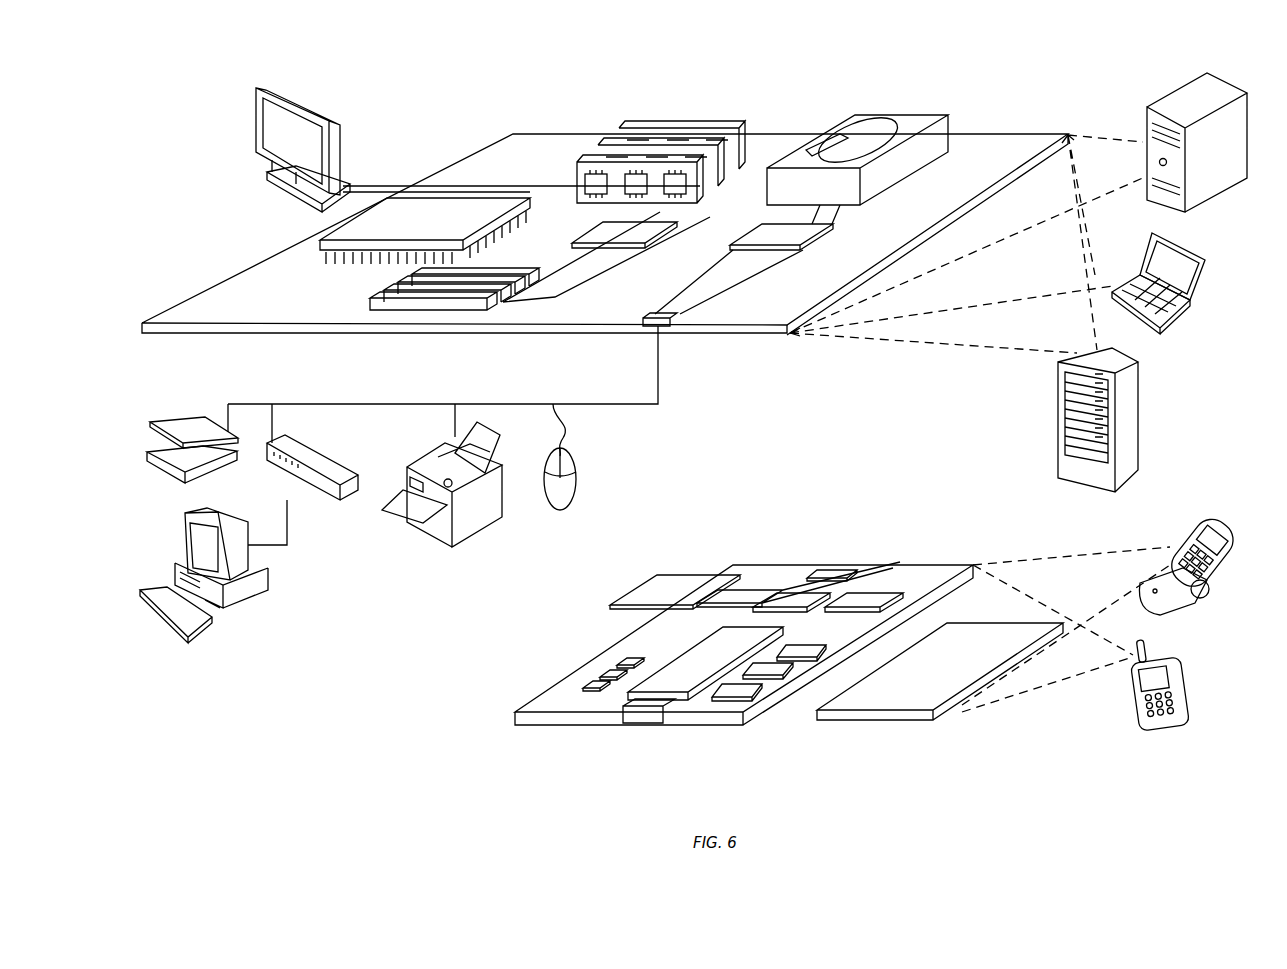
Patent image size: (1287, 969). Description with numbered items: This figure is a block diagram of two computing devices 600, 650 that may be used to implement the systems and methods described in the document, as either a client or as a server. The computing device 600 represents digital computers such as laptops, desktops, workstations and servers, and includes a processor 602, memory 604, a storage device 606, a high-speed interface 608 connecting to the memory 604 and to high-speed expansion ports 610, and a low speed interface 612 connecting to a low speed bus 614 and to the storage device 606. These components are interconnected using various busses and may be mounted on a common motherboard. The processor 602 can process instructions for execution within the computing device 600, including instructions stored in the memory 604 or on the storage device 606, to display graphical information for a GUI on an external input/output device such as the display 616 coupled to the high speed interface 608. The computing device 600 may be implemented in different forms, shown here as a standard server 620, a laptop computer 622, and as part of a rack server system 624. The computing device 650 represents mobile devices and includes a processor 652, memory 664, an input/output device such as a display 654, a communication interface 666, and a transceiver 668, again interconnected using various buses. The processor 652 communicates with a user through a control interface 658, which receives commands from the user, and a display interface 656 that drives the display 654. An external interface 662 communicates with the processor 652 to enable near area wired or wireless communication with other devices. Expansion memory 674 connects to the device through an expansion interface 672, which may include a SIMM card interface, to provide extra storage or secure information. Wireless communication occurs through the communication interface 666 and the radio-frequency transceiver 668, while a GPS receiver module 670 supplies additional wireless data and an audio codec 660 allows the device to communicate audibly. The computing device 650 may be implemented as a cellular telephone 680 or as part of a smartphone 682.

The computing device 600 is at (441, 108).
The processor 602 is at (320, 243).
The memory 604 is at (636, 128).
The storage device 606 is at (855, 113).
The high-speed interface 608 is at (600, 231).
The high-speed expansion ports 610 is at (383, 297).
The low speed interface 612 is at (760, 228).
The low speed bus 614 is at (659, 326).
The display 616 is at (262, 83).
The standard server 620 is at (1147, 118).
The laptop computer 622 is at (1207, 256).
The rack server system 624 is at (1058, 441).
The computing device 650 is at (488, 723).
The processor 652 is at (680, 684).
The display 654 is at (900, 703).
The display interface 656 is at (740, 692).
The control interface 658 is at (770, 673).
The audio codec 660 is at (797, 653).
The external interface 662 is at (647, 708).
The memory 664 is at (600, 677).
The communication interface 666 is at (793, 598).
The transceiver 668 is at (863, 598).
The GPS receiver module 670 is at (843, 567).
The expansion interface 672 is at (725, 576).
The expansion memory 674 is at (660, 579).
The cellular telephone 680 is at (1193, 527).
The smartphone 682 is at (1133, 690).